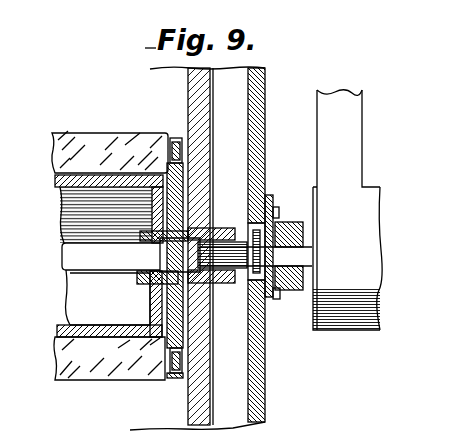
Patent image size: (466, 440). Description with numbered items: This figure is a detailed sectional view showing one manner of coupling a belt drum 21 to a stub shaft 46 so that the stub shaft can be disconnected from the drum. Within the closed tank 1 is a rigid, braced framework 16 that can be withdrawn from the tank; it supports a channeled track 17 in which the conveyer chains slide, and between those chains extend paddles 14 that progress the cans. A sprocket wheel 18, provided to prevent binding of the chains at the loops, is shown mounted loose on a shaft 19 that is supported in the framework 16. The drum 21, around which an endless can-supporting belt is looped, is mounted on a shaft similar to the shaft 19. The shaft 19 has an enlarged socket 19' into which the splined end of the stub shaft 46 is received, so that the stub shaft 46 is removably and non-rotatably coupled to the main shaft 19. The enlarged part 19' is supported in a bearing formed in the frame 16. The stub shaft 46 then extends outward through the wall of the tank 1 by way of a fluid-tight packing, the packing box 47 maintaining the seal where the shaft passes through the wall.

The closed tank 1 is at (265, 406).
The paddles 14 is at (55, 162).
The framework 16 is at (188, 90).
The channeled track 17 is at (182, 378).
The sprocket wheel 18 is at (182, 190).
The shaft 19 is at (187, 245).
The enlarged socket 19' is at (219, 238).
The drum 21 is at (72, 313).
The stub shaft 46 is at (302, 250).
The packing box 47 is at (276, 300).